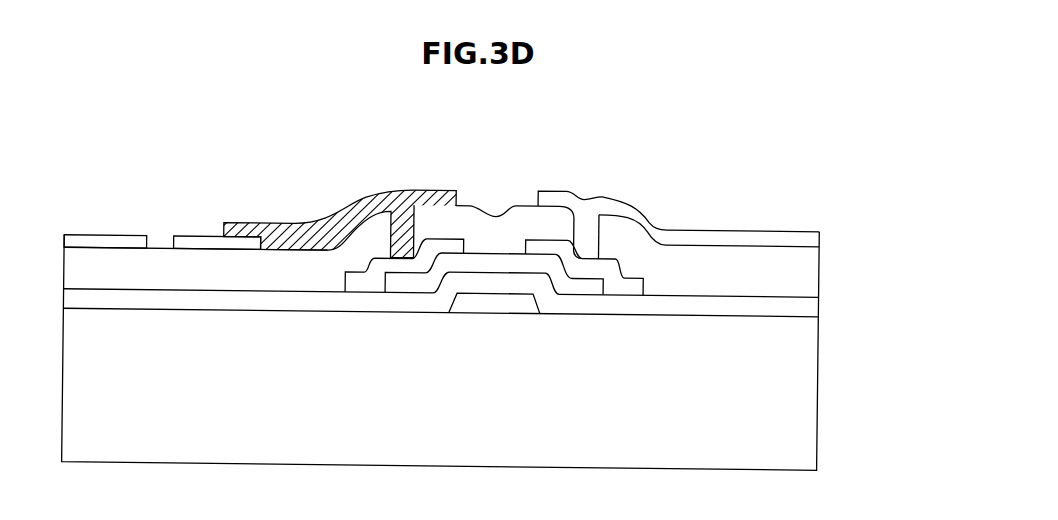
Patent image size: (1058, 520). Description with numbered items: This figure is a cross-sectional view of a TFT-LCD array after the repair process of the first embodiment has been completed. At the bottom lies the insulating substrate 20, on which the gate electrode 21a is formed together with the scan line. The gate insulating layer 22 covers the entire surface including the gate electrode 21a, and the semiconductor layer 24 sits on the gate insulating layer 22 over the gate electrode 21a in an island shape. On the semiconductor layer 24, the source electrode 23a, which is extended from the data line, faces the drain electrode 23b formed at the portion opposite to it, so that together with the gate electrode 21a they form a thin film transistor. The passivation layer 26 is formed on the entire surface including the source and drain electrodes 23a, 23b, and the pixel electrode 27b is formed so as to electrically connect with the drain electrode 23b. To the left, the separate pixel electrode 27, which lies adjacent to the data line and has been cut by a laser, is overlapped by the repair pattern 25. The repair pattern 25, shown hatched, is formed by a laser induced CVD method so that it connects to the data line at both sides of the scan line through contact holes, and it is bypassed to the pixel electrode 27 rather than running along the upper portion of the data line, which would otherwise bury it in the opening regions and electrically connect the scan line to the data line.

The insulating substrate 20 is at (810, 389).
The gate electrode 21a is at (492, 307).
The gate insulating layer 22 is at (812, 304).
The source electrode 23a is at (453, 246).
The drain electrode 23b is at (636, 278).
The semiconductor layer 24 is at (583, 285).
The repair pattern 25 is at (405, 208).
The passivation layer 26 is at (812, 273).
The pixel electrode 27 is at (113, 245).
The pixel electrode 27b is at (812, 236).